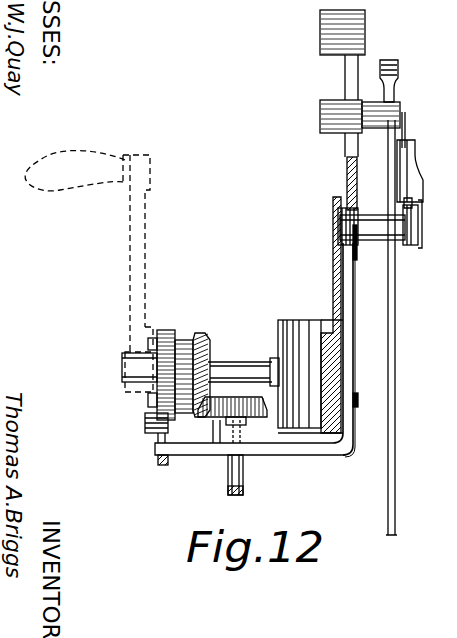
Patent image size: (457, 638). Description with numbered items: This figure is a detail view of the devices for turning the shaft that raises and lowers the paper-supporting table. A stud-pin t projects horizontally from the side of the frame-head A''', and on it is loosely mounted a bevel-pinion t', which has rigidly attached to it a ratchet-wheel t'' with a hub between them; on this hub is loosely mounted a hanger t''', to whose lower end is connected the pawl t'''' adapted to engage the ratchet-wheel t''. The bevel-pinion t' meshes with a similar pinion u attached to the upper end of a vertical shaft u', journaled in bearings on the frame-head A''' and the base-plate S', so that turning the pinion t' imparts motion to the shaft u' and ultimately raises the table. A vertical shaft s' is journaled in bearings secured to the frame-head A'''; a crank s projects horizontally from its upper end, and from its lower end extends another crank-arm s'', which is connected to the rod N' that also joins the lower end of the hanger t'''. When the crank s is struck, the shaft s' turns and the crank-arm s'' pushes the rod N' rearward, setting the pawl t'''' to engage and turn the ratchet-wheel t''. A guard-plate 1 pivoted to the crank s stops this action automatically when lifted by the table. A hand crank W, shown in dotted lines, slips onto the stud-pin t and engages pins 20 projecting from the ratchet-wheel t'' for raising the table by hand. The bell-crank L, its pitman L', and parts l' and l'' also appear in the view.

The bell-crank L is at (398, 81).
The rod l'' is at (418, 130).
The cam piece l' is at (416, 171).
The crank-arm s'' is at (427, 201).
The guard-plate 1 is at (418, 222).
The crank s is at (372, 227).
The frame-head A''' is at (328, 291).
The pitman L' is at (399, 327).
The vertical shaft s' is at (353, 350).
The base plate S' is at (250, 460).
The rod N' is at (141, 466).
The vertical shaft u' is at (219, 457).
The pinion u is at (232, 404).
The stud-pin t is at (243, 363).
The bevel-pinion t' is at (206, 366).
The hanger t''' is at (186, 358).
The ratchet-wheel t'' is at (166, 362).
The pins 20 is at (148, 342).
The pawl t'''' is at (141, 428).
The crank W is at (130, 275).